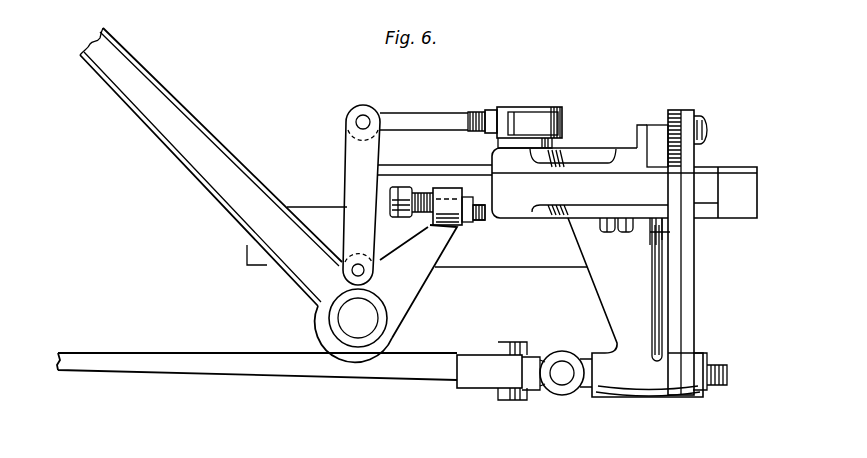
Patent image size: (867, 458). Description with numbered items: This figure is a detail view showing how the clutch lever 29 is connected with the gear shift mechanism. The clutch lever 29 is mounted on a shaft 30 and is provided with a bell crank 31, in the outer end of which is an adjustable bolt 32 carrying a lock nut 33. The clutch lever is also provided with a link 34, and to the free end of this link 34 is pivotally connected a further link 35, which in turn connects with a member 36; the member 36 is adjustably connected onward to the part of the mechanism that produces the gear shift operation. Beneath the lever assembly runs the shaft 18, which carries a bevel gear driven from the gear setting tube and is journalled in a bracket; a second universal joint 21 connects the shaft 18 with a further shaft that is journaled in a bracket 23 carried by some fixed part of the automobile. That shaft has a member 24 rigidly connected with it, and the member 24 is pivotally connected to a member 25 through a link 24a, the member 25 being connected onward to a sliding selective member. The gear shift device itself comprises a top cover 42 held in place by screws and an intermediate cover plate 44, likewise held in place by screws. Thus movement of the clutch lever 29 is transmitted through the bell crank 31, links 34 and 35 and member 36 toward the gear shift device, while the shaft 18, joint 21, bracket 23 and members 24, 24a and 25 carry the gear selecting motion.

The shaft 18 is at (217, 368).
The second universal joint 21 is at (550, 393).
The bracket 23 is at (620, 328).
The member 24 is at (693, 300).
The link 24a is at (678, 153).
The member 25 is at (657, 140).
The clutch lever 29 is at (206, 136).
The shaft 30 is at (343, 322).
The bell crank 31 is at (418, 288).
The adjustable bolt 32 is at (481, 218).
The lock nut 33 is at (468, 224).
The link 34 is at (346, 152).
The link 35 is at (417, 120).
The member 36 is at (562, 118).
The top cover 42 is at (625, 150).
The intermediate cover plate 44 is at (445, 175).